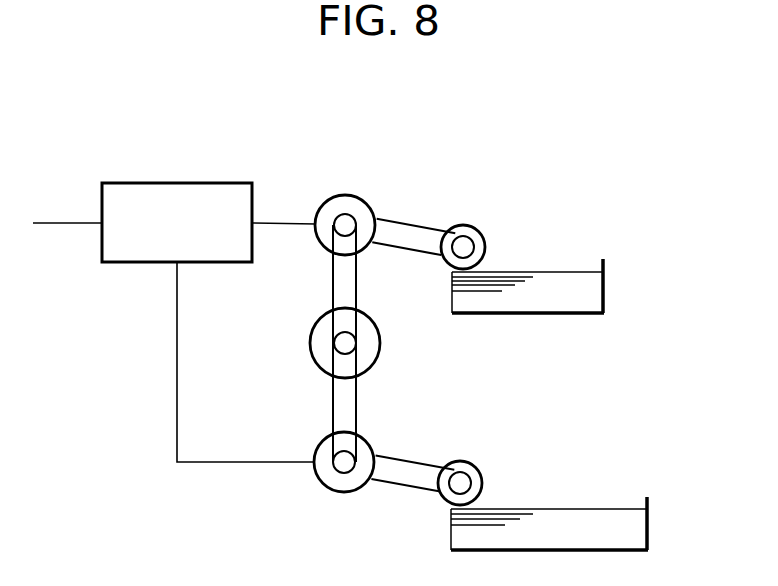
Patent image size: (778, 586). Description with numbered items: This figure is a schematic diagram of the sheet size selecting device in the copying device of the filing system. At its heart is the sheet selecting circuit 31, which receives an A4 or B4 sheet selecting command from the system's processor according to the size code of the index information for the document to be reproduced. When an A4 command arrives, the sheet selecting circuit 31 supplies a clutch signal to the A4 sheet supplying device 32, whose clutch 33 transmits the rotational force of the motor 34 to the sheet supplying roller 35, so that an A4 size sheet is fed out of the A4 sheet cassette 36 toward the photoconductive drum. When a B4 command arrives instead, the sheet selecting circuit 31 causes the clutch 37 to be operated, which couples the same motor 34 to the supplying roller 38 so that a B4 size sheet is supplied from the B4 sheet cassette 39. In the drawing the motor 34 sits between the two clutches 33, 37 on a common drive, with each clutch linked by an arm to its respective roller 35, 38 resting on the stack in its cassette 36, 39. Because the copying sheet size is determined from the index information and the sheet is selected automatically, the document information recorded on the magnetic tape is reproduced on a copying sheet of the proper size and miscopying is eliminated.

The sheet selecting circuit 31 is at (178, 183).
The A4 sheet supplying device 32 is at (407, 210).
The clutch 33 is at (345, 195).
The motor 34 is at (381, 350).
The sheet supplying roller 35 is at (466, 226).
The A4 sheet cassette 36 is at (605, 280).
The clutch 37 is at (330, 490).
The supplying roller 38 is at (464, 461).
The B4 sheet cassette 39 is at (650, 518).